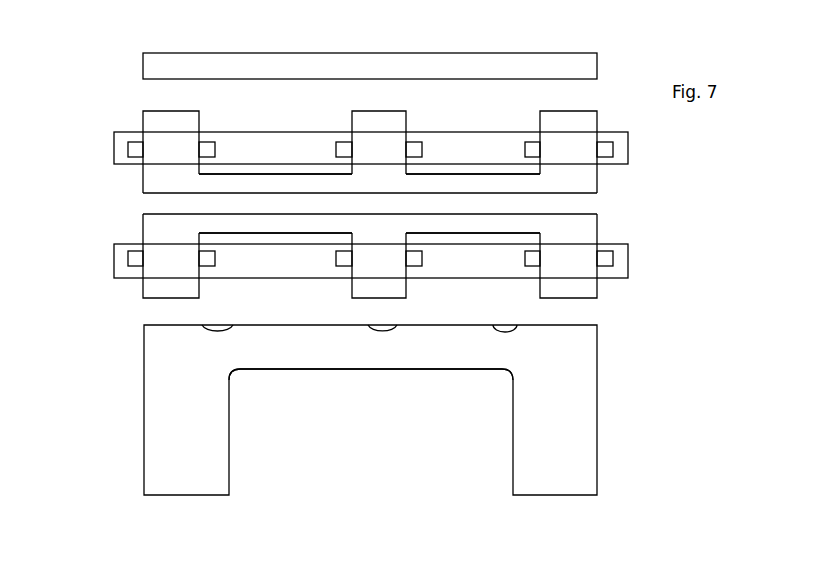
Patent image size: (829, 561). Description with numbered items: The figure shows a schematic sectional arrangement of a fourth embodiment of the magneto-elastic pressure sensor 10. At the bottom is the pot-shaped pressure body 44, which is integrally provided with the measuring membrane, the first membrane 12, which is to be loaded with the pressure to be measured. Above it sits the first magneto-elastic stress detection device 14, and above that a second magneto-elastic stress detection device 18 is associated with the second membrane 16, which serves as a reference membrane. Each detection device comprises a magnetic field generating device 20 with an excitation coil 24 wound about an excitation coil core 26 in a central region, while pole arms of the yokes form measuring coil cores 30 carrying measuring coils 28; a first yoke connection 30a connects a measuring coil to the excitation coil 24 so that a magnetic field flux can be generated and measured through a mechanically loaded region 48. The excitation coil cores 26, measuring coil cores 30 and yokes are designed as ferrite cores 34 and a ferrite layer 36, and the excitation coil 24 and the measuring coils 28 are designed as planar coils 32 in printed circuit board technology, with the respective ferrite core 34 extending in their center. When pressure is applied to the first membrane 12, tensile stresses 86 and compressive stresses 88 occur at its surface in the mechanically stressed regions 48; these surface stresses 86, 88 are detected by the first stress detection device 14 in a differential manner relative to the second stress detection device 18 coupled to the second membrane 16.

The pressure sensor 10 is at (694, 369).
The first membrane 12 is at (358, 357).
The first magneto-elastic stress detection device 14 is at (663, 259).
The second membrane 16 is at (158, 60).
The second magneto-elastic stress detection device 18 is at (655, 147).
The magnetic field generating device 20 is at (361, 94).
The excitation coil 24 is at (334, 235).
The excitation coil core 26 is at (393, 252).
The measuring coil 28 is at (120, 163).
The measuring coil core 30 is at (158, 143).
The first yoke connection 30a is at (518, 187).
The planar coil 32 is at (340, 158).
The ferrite core 34 is at (548, 121).
The ferrite layer 36 is at (207, 186).
The pressure body 44 is at (162, 430).
The mechanically stressed region 48 is at (228, 346).
The tensile stress 86 is at (385, 330).
The compressive stress 88 is at (216, 328).